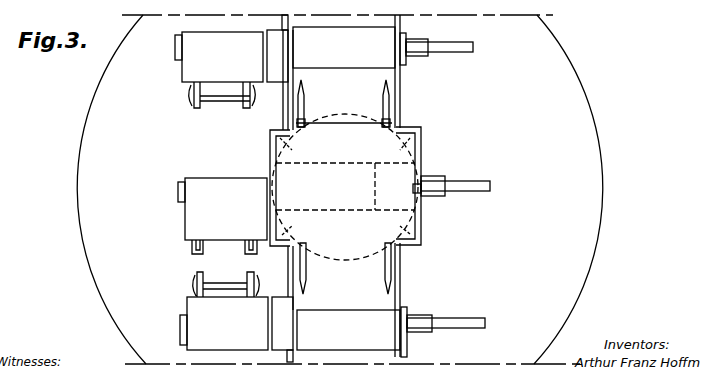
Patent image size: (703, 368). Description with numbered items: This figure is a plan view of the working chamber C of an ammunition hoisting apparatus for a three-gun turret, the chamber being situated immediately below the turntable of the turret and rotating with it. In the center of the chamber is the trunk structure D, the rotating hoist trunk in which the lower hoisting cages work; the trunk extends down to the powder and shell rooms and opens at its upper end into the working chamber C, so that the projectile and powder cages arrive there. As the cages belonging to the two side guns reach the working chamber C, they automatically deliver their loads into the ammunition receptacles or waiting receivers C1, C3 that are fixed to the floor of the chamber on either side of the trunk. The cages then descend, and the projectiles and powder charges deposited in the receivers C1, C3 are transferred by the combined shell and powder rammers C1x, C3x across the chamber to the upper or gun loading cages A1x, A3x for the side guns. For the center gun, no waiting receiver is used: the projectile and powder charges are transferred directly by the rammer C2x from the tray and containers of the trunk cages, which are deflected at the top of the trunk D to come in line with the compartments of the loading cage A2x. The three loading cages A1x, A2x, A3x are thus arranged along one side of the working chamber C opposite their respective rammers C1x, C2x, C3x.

The working chamber C is at (340, 189).
The trunk structure D is at (339, 188).
The gun loading cage A1x is at (219, 70).
The gun loading cage A2x is at (222, 216).
The gun loading cage A3x is at (224, 311).
The ammunition receptacle C1 is at (344, 47).
The ammunition receptacle C3 is at (348, 321).
The combined shell and powder rammer C1x is at (436, 45).
The rammer C2x is at (468, 182).
The combined shell and powder rammer C3x is at (443, 328).